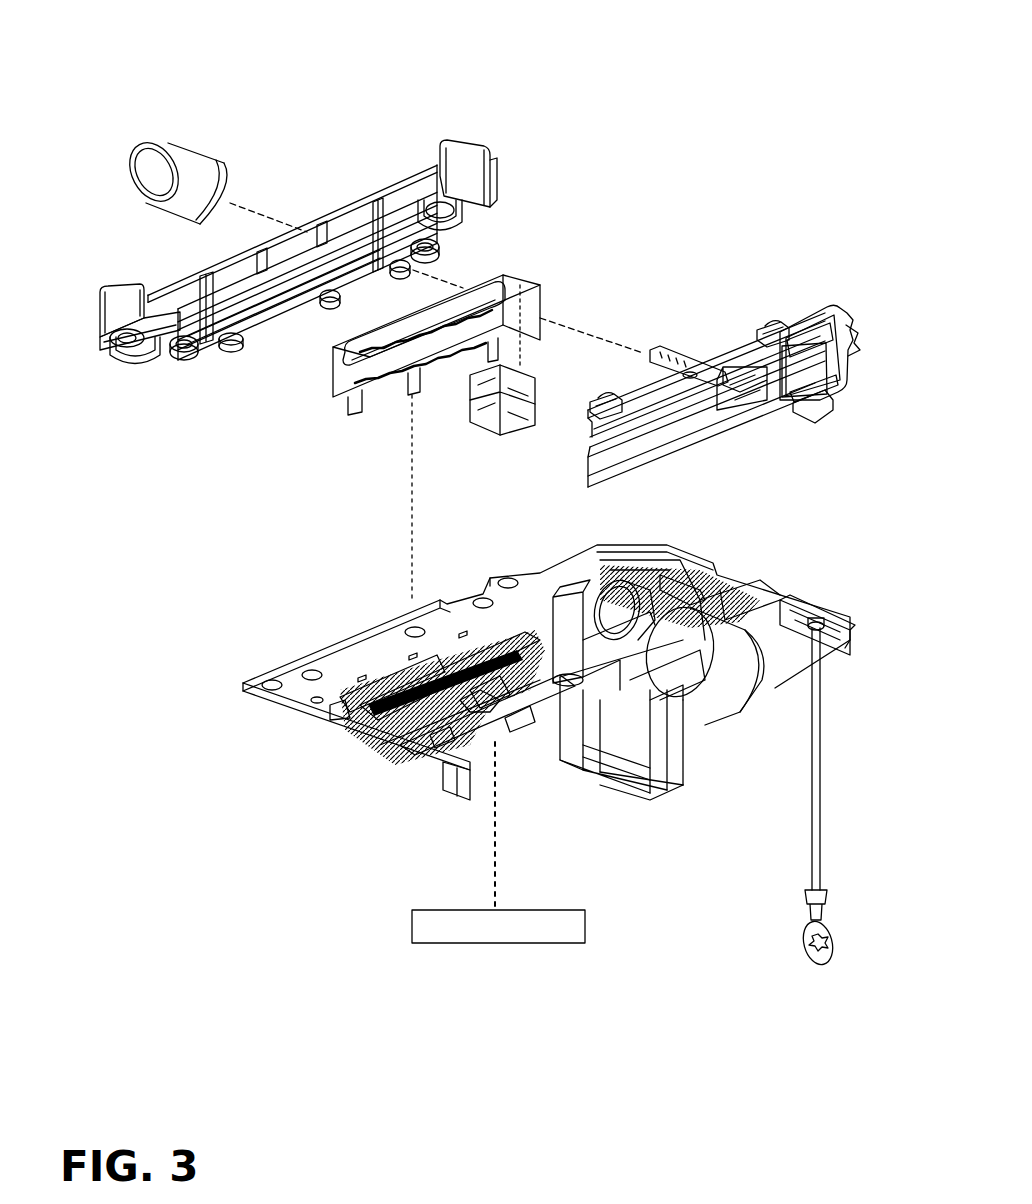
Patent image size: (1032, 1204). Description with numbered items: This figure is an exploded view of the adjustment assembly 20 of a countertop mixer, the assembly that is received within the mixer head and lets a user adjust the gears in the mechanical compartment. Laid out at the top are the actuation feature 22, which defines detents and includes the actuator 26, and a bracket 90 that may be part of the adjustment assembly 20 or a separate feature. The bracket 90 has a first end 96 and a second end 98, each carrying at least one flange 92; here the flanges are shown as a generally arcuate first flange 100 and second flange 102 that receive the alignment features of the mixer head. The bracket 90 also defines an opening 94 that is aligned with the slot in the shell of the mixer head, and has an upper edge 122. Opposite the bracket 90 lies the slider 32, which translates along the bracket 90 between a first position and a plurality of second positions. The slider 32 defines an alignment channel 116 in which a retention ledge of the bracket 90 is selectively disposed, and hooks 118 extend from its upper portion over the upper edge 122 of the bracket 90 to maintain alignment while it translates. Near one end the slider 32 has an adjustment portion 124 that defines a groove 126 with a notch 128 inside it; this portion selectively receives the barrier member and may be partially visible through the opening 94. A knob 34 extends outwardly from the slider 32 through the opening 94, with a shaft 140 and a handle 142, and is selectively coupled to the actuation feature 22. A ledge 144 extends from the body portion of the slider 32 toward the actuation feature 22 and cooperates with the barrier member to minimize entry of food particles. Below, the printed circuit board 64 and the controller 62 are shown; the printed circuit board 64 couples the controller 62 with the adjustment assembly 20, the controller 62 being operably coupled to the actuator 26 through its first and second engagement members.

The adjustment assembly 20 is at (665, 101).
The actuation feature 22 is at (373, 407).
The actuator 26 is at (477, 403).
The slider 32 is at (713, 437).
The knob 34 is at (823, 417).
The controller 62 is at (437, 943).
The printed circuit board 64 is at (283, 700).
The bracket 90 is at (207, 350).
The flange 92 is at (140, 360).
The opening 94 is at (233, 303).
The first end 96 is at (100, 305).
The second end 98 is at (473, 162).
The first flange 100 is at (127, 350).
The second flange 102 is at (457, 212).
The alignment channel 116 is at (818, 333).
The hooks 118 is at (603, 393).
The upper edge 122 is at (717, 350).
The adjustment portion 124 is at (818, 387).
The groove 126 is at (802, 373).
The notch 128 is at (822, 363).
The shaft 140 is at (697, 362).
The handle 142 is at (188, 163).
The ledge 144 is at (850, 347).